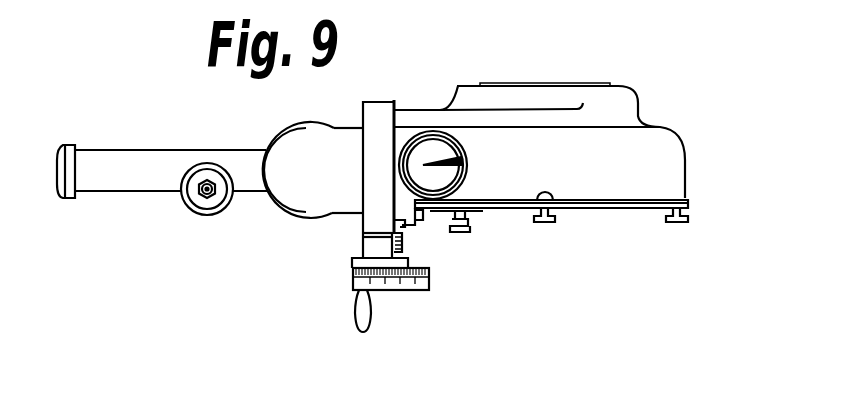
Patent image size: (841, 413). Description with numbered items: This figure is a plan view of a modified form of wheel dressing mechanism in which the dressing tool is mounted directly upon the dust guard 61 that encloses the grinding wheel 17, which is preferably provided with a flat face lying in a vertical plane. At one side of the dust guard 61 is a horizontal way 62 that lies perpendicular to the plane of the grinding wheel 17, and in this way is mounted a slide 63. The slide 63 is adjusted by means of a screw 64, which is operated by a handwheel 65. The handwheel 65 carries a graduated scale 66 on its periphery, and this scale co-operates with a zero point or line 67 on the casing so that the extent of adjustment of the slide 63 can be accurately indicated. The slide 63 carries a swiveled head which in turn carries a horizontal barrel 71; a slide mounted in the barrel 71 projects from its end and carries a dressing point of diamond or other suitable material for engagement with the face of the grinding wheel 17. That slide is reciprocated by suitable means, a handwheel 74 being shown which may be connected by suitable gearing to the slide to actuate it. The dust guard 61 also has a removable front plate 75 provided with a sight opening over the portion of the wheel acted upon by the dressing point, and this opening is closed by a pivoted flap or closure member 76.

The horizontal barrel 71 is at (142, 182).
The handwheel 74 is at (200, 211).
The slide 63 is at (368, 125).
The horizontal way 62 is at (400, 135).
The dust guard 61 is at (617, 112).
The grinding wheel 17 is at (460, 172).
The removable front plate 75 is at (648, 206).
The pivoted flap or closure member 76 is at (480, 211).
The screw 64 is at (401, 242).
The zero point or line 67 is at (352, 262).
The handwheel 65 is at (398, 287).
The graduated scale 66 is at (355, 274).